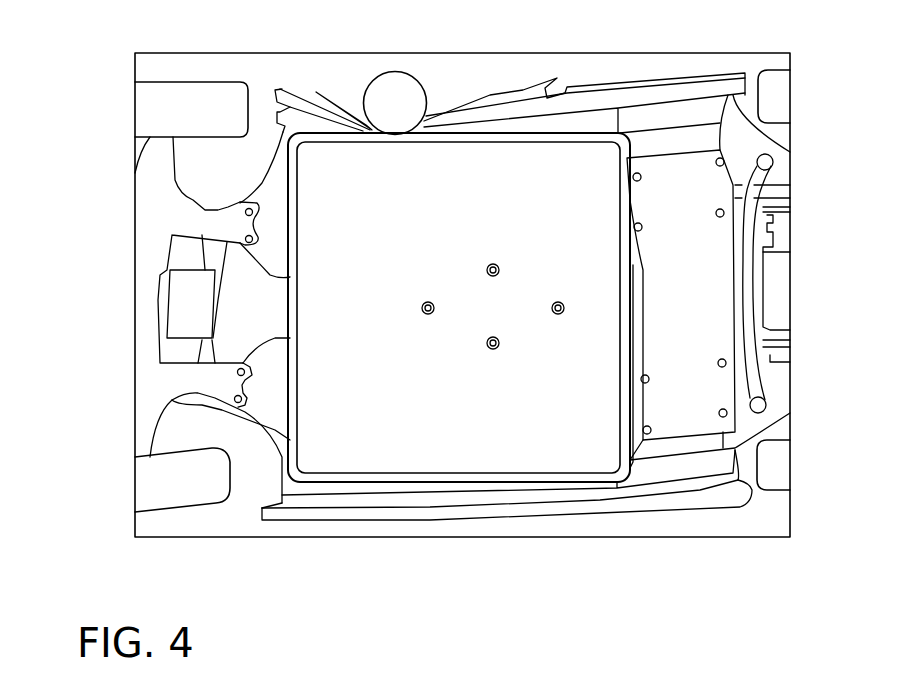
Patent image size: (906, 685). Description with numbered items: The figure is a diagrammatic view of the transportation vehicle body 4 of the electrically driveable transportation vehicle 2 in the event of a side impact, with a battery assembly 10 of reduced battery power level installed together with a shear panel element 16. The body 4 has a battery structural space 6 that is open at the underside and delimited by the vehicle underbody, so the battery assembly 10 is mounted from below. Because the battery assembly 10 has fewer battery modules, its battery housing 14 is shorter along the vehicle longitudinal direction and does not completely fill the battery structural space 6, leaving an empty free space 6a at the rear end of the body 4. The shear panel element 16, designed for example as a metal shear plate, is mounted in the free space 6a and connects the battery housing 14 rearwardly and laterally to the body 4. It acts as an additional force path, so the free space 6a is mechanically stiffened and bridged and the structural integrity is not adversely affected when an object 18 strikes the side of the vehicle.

The transportation vehicle 2 is at (258, 52).
The transportation vehicle body 4 is at (523, 507).
The battery structural space 6 is at (588, 100).
The free space 6a is at (698, 118).
The battery assembly 10 is at (526, 518).
The battery housing 14 is at (512, 168).
The shear panel element 16 is at (710, 498).
The object 18 is at (395, 103).